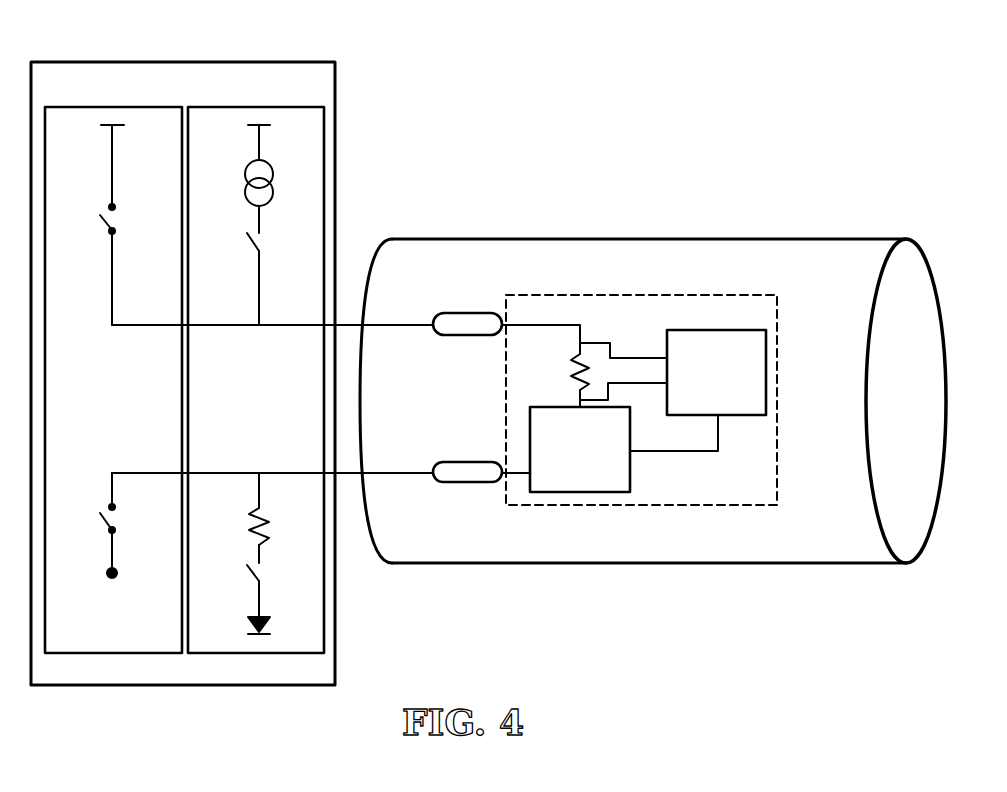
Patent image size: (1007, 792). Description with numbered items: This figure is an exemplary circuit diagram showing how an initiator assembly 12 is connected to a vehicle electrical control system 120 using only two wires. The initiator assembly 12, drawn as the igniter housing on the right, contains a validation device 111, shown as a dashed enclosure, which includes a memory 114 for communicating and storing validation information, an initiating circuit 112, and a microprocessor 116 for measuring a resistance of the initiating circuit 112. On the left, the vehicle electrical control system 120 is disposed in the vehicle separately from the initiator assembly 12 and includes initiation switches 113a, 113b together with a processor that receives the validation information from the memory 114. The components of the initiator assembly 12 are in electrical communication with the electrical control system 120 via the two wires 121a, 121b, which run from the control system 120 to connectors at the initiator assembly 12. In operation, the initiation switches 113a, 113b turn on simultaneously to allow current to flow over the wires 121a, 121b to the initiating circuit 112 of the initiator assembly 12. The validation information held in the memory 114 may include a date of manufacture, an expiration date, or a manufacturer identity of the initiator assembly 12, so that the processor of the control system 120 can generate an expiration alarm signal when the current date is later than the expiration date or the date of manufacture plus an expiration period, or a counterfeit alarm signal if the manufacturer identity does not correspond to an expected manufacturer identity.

The initiator assembly 12 is at (711, 220).
The validation device 111 is at (652, 295).
The initiating circuit 112 is at (573, 370).
The memory 114 is at (603, 462).
The microprocessor 116 is at (739, 385).
The vehicle electrical control system 120 is at (337, 87).
The wire 121a is at (349, 323).
The wire 121b is at (348, 475).
The initiation switch 113a is at (105, 221).
The initiation switch 113b is at (104, 528).